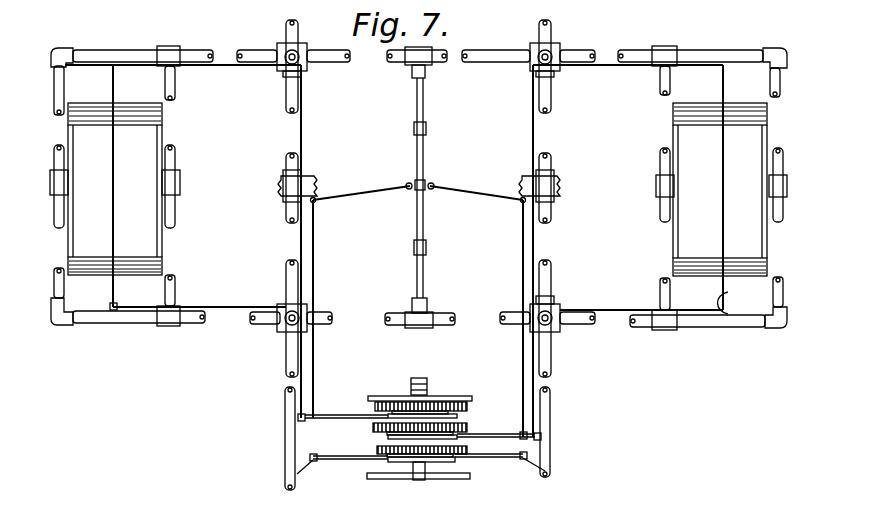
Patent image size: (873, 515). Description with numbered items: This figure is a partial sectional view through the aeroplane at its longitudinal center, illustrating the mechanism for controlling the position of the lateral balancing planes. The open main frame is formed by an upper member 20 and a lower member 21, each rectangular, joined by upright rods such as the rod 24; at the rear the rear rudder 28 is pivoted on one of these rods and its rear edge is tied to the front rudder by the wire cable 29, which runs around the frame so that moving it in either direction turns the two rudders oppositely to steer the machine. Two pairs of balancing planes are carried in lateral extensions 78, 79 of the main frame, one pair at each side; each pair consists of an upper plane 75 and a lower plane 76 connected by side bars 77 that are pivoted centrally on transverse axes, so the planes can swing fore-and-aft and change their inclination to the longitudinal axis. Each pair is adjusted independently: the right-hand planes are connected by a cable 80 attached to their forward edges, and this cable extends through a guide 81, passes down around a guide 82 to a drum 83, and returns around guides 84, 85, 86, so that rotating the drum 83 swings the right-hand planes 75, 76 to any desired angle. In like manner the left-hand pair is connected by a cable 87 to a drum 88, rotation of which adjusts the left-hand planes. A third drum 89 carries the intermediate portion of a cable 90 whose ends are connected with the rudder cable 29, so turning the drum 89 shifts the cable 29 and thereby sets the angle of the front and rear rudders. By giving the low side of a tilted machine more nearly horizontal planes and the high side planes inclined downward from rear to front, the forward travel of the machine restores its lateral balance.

The upper member of the main frame 20 is at (298, 54).
The lower member of the main frame 21 is at (283, 325).
The upright rod 24 is at (287, 94).
The rear rudder 28 is at (424, 172).
The wire cable 29 is at (375, 193).
The upper balancing plane 75 is at (130, 105).
The lower balancing plane 76 is at (147, 264).
The side bar 77 is at (74, 201).
The lateral extension of the main frame 78 is at (702, 52).
The lateral extension of the main frame 79 is at (197, 53).
The cable 80 is at (625, 67).
The guide 81 is at (538, 70).
The guide 82 is at (540, 439).
The drum 83 is at (388, 437).
The guide 84 is at (530, 436).
The guide 85 is at (533, 307).
The guide 86 is at (725, 285).
The cable 87 is at (213, 66).
The drum 88 is at (462, 414).
The third drum 89 is at (455, 458).
The cable 90 is at (352, 462).